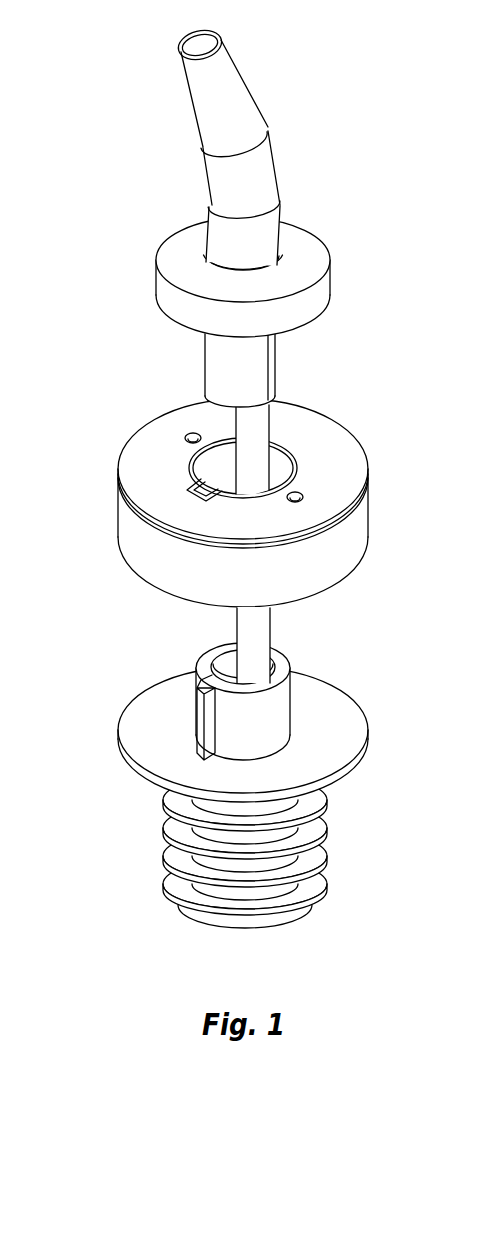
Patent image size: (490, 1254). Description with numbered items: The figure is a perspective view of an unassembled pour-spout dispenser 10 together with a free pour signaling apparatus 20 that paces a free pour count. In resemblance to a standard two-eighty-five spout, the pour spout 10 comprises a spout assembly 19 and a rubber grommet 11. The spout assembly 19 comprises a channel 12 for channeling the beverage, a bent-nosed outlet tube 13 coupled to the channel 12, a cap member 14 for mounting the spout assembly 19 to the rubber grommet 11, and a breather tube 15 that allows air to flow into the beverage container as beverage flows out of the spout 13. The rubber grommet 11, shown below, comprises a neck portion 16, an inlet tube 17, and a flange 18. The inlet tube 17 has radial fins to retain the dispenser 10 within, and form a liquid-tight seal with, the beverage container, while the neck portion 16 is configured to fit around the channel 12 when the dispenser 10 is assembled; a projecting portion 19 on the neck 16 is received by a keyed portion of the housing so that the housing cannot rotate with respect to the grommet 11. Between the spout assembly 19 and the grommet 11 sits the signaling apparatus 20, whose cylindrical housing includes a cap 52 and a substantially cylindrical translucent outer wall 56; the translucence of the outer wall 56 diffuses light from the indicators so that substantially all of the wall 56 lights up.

The pour-spout dispenser 10 is at (233, 525).
The rubber grommet 11 is at (323, 833).
The channel 12 is at (233, 370).
The bent-nosed outlet tube 13 is at (263, 165).
The cap member 14 is at (330, 285).
The breather tube 15 is at (260, 633).
The neck portion 16 is at (293, 708).
The inlet tube 17 is at (185, 875).
The flange 18 is at (118, 748).
The spout assembly 19 is at (267, 383).
The free pour signaling apparatus 20 is at (235, 503).
The cap 52 is at (152, 458).
The translucent outer wall 56 is at (128, 522).